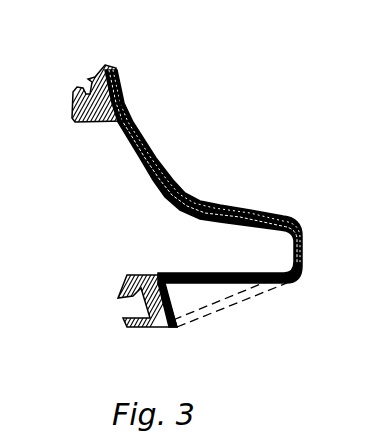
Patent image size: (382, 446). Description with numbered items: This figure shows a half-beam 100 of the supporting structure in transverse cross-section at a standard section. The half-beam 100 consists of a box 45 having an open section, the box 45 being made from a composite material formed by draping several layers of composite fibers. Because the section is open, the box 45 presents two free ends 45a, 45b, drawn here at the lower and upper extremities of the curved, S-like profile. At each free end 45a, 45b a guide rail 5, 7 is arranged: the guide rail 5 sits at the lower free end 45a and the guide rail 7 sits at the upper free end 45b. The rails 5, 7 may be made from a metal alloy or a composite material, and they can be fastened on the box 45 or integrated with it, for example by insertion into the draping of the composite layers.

The half-beam 100 is at (250, 88).
The box 45 is at (190, 202).
The free end 45a is at (172, 303).
The free end 45b is at (116, 96).
The guide rail 7 is at (73, 107).
The guide rail 5 is at (121, 286).